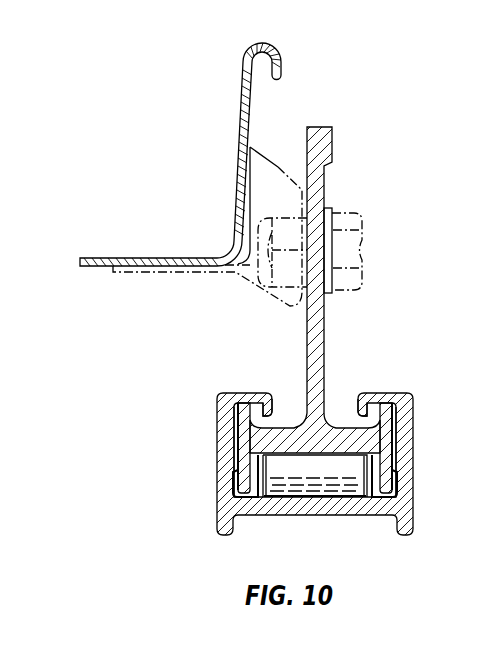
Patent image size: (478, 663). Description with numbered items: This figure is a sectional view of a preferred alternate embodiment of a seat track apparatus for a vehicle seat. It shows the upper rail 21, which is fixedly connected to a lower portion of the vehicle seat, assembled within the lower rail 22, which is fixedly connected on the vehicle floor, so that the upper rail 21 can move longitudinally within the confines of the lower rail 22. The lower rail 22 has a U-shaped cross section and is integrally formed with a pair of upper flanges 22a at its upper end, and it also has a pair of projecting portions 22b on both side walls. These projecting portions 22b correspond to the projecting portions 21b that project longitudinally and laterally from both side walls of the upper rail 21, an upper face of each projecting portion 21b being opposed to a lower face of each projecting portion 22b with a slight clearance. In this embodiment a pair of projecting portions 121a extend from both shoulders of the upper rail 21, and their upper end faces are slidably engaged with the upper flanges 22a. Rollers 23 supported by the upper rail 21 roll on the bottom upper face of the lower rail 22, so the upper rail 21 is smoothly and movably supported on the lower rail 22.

The upper rail 21 is at (322, 421).
The projecting portion 21b is at (242, 486).
The lower rail 22 is at (341, 503).
The upper flange 22a is at (265, 407).
The projecting portion 22b is at (233, 457).
The roller 23 is at (290, 475).
The projecting portion 121a is at (248, 405).